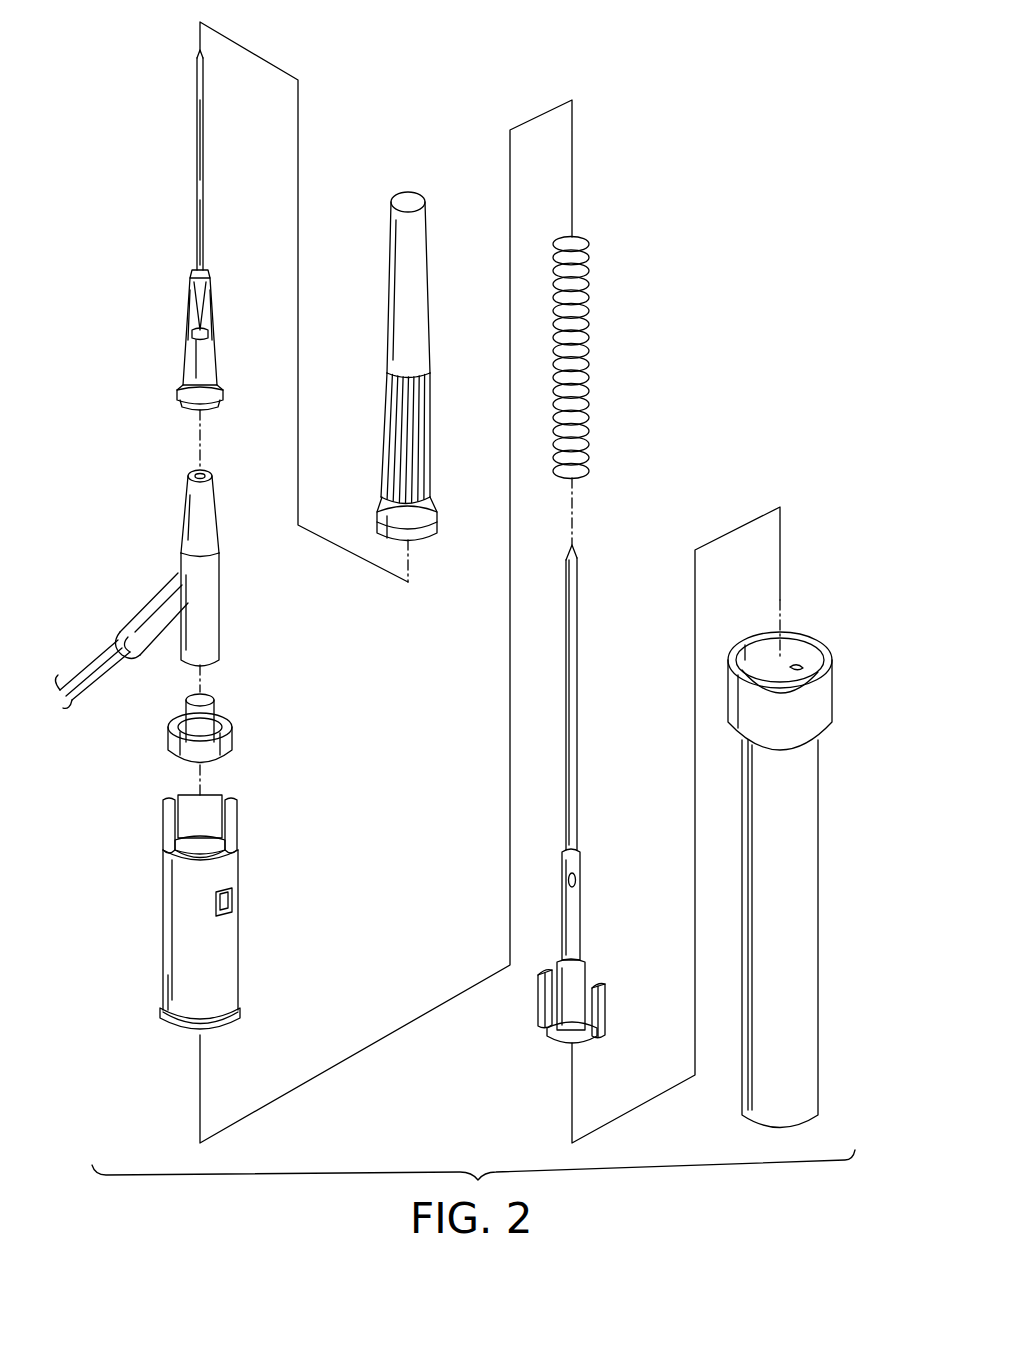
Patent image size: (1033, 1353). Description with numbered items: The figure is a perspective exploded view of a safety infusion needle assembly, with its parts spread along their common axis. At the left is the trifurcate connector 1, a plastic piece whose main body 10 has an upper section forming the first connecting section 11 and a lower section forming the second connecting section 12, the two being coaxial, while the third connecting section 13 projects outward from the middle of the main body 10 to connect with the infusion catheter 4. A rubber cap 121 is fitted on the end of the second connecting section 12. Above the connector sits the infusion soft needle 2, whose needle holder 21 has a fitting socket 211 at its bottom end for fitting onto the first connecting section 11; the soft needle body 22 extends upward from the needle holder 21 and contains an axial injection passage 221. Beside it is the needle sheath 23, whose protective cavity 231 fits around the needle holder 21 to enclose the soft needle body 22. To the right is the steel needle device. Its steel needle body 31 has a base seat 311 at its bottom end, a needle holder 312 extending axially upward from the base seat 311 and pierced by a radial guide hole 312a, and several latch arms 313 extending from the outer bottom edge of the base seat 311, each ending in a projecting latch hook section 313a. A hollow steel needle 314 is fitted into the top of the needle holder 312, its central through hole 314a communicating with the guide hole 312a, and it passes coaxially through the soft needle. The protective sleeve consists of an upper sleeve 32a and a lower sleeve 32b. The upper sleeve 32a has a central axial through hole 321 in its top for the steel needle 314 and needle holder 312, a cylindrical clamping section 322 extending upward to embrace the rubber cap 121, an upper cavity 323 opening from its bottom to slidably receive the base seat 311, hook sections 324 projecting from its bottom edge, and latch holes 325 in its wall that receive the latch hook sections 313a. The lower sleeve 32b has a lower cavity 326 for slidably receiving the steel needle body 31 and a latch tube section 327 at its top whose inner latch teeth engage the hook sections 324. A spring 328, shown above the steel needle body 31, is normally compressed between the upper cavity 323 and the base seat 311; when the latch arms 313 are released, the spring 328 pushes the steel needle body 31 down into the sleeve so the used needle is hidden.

The trifurcate connector 1 is at (164, 582).
The infusion soft needle 2 is at (163, 241).
The infusion catheter 4 is at (104, 652).
The main body 10 is at (212, 563).
The first connecting section 11 is at (210, 492).
The second connecting section 12 is at (207, 640).
The third connecting section 13 is at (150, 608).
The needle holder 21 is at (163, 351).
The soft needle body 22 is at (156, 160).
The needle sheath 23 is at (413, 392).
The rubber cap 121 is at (232, 735).
The fitting socket 211 is at (186, 411).
The axial injection passage 221 is at (196, 50).
The protective cavity 231 is at (420, 548).
The steel needle body 31 is at (565, 824).
The upper sleeve 32a is at (206, 933).
The lower sleeve 32b is at (807, 844).
The base seat 311 is at (565, 1026).
The needle holder 312 is at (614, 892).
The radial guide hole 312a is at (576, 878).
The latch arm 313 is at (565, 1014).
The latch hook section 313a is at (600, 995).
The steel needle 314 is at (618, 697).
The central through hole 314a is at (578, 548).
The central axial through hole 321 is at (188, 850).
The cylindrical clamping section 322 is at (238, 822).
The upper cavity 323 is at (190, 1033).
The hook section 324 is at (235, 1018).
The latch hole 325 is at (235, 900).
The lower cavity 326 is at (790, 912).
The latch tube section 327 is at (807, 655).
The spring 328 is at (586, 330).